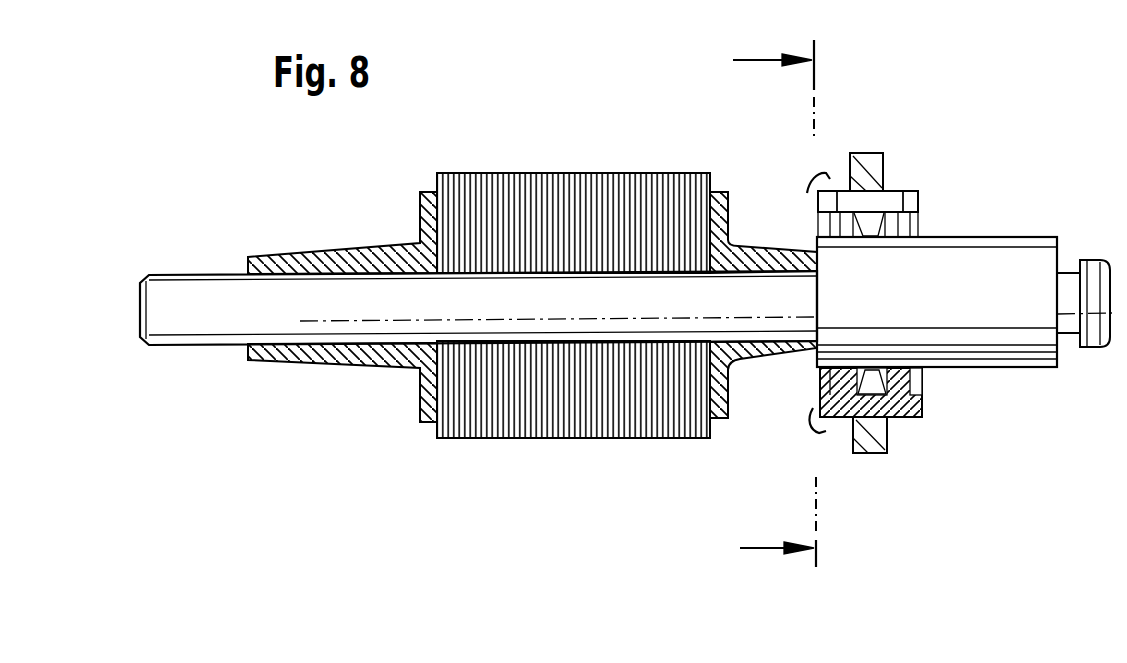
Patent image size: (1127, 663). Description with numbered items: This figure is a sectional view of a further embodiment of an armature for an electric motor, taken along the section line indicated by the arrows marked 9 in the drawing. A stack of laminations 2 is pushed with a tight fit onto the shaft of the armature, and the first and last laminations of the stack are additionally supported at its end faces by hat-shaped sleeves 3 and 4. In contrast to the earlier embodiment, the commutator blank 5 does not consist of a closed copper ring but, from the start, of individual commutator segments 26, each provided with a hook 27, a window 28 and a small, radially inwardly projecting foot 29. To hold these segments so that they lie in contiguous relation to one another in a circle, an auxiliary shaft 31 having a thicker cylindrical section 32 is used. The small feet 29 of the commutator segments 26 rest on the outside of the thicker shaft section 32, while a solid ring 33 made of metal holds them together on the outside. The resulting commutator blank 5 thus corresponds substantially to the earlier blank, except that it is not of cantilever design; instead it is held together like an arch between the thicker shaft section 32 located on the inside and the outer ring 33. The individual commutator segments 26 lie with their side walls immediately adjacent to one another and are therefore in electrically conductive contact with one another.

The stack of laminations 2 is at (548, 196).
The hat-shaped sleeve 3 is at (348, 352).
The hat-shaped sleeve 4 is at (765, 358).
The commutator blank 5 is at (893, 192).
The central bore 9 is at (785, 307).
The commutator segment 26 is at (845, 198).
The hook 27 is at (812, 176).
The window 28 is at (826, 205).
The foot 29 is at (830, 225).
The auxiliary shaft 31 is at (200, 292).
The thicker cylindrical shaft section 32 is at (1000, 325).
The solid ring 33 is at (870, 456).